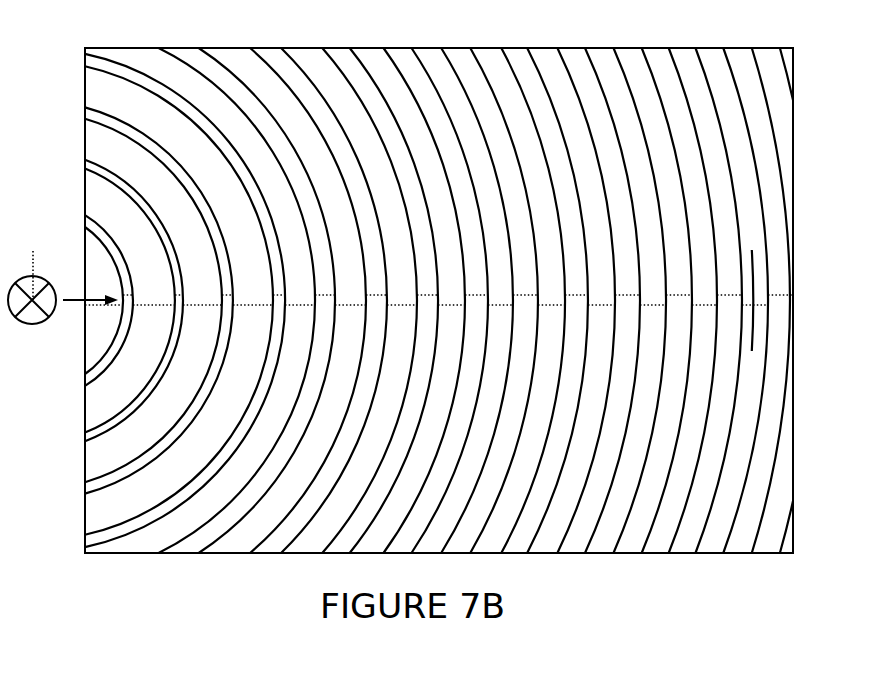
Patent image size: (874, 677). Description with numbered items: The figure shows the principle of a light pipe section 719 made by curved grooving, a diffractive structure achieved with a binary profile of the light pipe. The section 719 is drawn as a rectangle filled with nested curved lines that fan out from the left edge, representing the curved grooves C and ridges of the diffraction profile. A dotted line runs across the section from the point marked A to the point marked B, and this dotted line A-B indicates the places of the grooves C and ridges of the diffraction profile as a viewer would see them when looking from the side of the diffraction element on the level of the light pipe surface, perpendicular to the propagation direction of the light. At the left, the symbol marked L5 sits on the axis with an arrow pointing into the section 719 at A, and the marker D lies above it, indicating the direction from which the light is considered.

The light pipe section 719 is at (85, 48).
The lens L5 is at (32, 316).
The light propagation direction arrow A is at (90, 292).
The image plane B is at (802, 300).
The grooves C is at (758, 273).
The lens axis indicator D is at (35, 264).